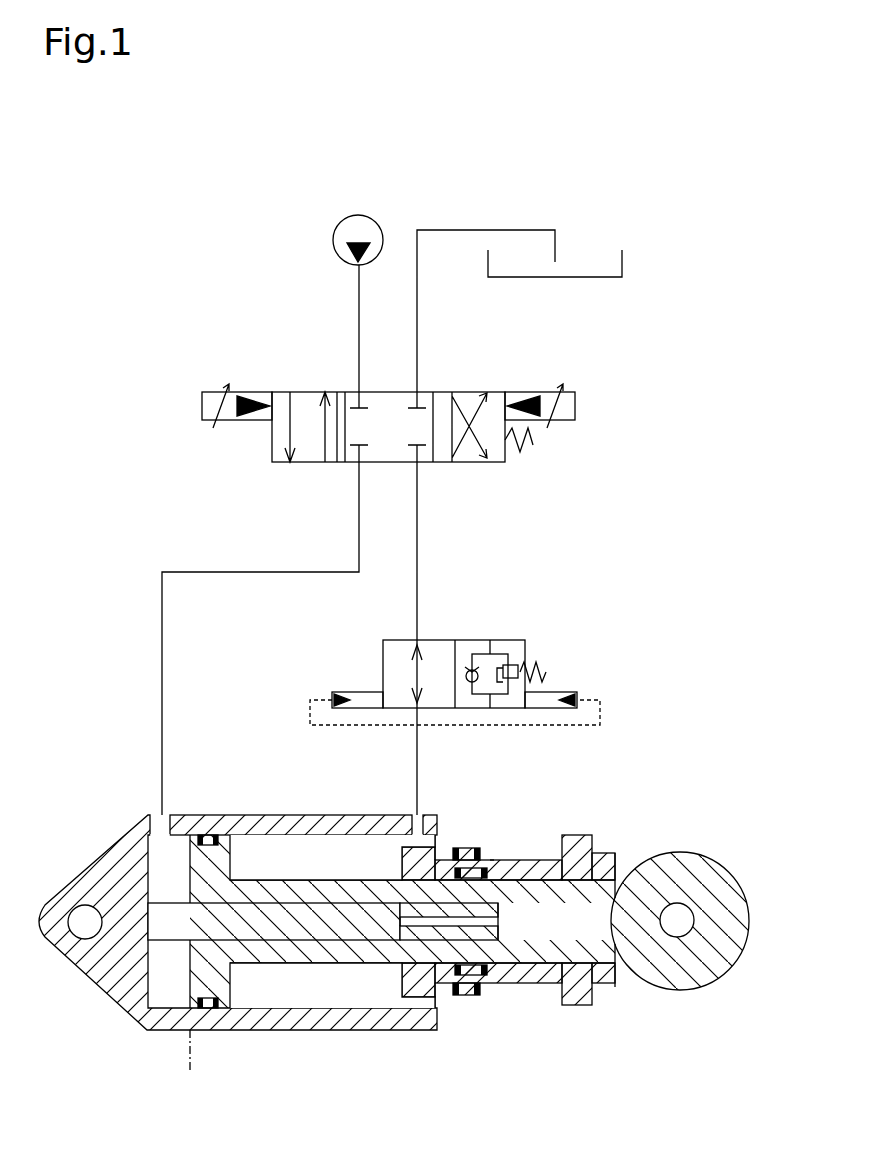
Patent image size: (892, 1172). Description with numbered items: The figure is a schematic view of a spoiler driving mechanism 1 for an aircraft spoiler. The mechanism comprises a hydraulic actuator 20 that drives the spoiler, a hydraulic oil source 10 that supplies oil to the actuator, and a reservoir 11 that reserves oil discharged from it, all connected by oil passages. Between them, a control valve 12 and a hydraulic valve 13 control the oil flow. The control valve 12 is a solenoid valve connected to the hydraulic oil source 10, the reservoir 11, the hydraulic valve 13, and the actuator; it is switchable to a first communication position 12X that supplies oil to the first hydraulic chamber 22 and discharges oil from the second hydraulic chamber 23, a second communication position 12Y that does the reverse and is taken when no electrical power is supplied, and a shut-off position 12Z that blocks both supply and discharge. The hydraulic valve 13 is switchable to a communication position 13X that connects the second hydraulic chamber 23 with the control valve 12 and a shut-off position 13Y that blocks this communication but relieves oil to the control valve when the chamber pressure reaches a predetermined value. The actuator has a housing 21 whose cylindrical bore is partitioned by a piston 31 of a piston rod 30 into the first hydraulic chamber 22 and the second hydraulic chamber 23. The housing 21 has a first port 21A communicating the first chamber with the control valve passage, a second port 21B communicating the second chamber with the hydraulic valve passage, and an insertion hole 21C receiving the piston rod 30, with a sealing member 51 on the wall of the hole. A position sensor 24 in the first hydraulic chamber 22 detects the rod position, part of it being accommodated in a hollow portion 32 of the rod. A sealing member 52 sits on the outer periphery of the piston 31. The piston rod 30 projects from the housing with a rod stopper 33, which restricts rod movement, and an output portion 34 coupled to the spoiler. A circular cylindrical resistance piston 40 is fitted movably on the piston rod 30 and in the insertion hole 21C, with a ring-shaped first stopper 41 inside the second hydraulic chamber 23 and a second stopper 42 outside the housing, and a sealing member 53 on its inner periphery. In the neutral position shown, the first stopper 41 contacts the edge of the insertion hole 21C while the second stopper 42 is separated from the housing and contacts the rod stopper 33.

The spoiler driving mechanism 1 is at (156, 179).
The hydraulic oil source 10 is at (358, 215).
The reservoir 11 is at (624, 262).
The control valve 12 is at (219, 358).
The first communication position 12X is at (298, 464).
The second communication position 12Y is at (466, 464).
The shut-off position 12Z is at (386, 464).
The hydraulic valve 13 is at (526, 613).
The communication position 13X is at (392, 640).
The shut-off position 13Y is at (470, 640).
The hydraulic actuator 20 is at (90, 816).
The housing 21 is at (100, 1001).
The first port 21A is at (172, 816).
The second port 21B is at (418, 832).
The insertion hole 21C is at (494, 846).
The first hydraulic chamber 22 is at (160, 848).
The second hydraulic chamber 23 is at (330, 828).
The position sensor 24 is at (160, 912).
The piston rod 30 is at (643, 820).
The piston 31 is at (221, 982).
The hollow portion 32 is at (269, 905).
The rod stopper 33 is at (608, 988).
The output portion 34 is at (708, 988).
The resistance piston 40 is at (548, 858).
The first stopper 41 is at (420, 1000).
The second stopper 42 is at (573, 1006).
The sealing member 51 is at (465, 848).
The sealing member 52 is at (208, 836).
The sealing member 53 is at (478, 996).